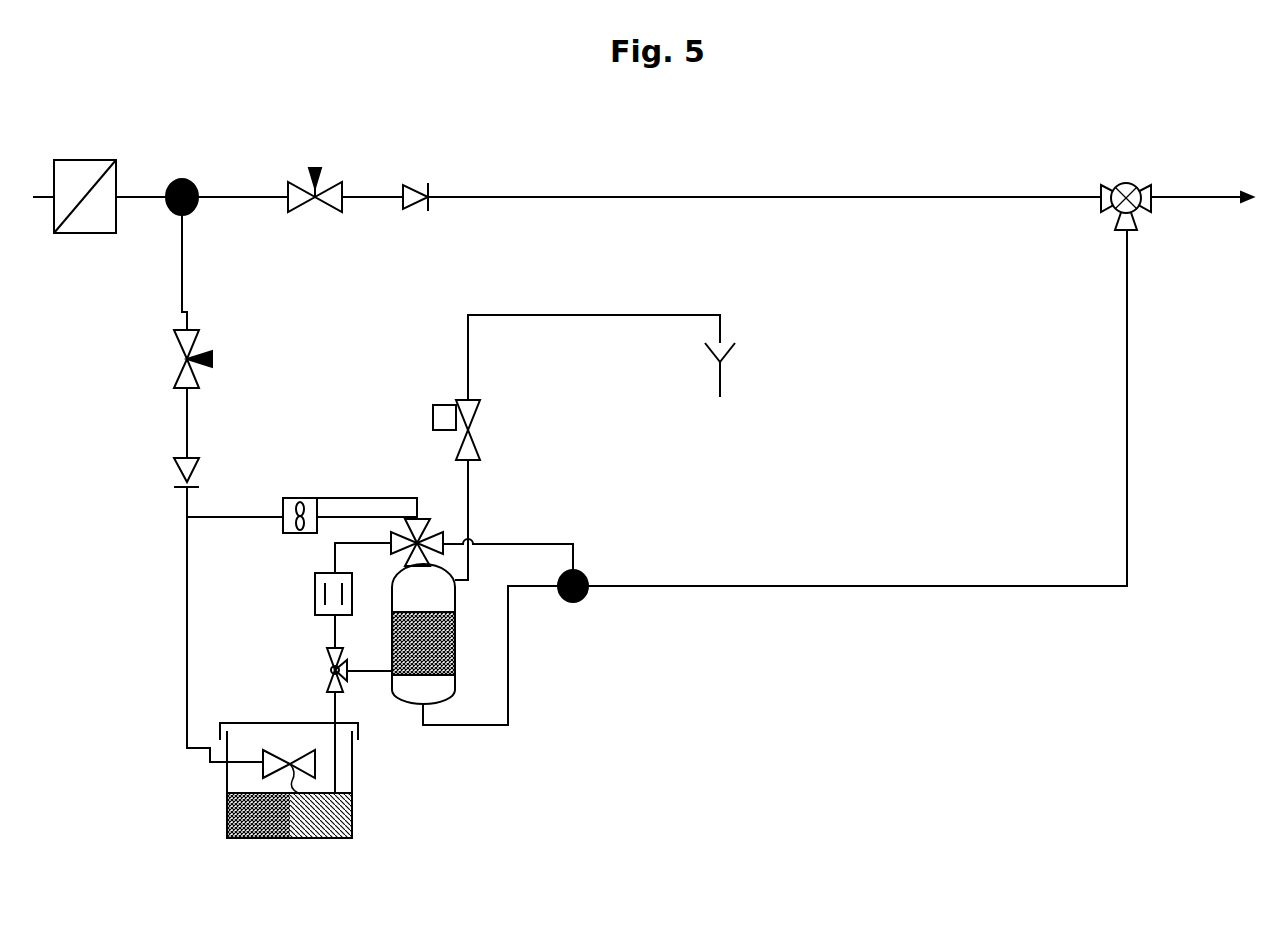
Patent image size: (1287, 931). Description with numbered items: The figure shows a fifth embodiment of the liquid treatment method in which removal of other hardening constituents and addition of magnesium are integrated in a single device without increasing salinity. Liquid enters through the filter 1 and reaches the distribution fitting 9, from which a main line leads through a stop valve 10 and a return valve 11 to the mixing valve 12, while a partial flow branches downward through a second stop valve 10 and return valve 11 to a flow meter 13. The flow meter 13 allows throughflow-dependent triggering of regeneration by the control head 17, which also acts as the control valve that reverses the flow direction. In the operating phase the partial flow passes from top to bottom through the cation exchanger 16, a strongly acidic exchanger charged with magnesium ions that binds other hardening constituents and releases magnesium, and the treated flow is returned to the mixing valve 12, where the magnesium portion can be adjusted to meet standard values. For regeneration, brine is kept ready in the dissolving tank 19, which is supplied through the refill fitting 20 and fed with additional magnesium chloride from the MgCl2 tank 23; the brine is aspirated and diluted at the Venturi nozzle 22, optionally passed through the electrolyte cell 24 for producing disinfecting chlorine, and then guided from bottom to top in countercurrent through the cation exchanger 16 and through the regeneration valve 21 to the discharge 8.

The filter 1 is at (85, 153).
The discharge 8 is at (735, 372).
The distribution fitting 9 is at (185, 168).
The stop valve 10 is at (280, 155).
The return valve 11 is at (405, 155).
The mixing valve 12 is at (1115, 158).
The flow meter 13 is at (300, 493).
The cation exchanger 16 is at (462, 643).
The control head 17 is at (433, 503).
The dissolving tank 19 is at (368, 808).
The refill fitting 20 is at (265, 748).
The regeneration valve 21 is at (493, 430).
The Venturi nozzle 22 is at (317, 660).
The MgCl2 tank 23 is at (213, 807).
The electrolyte cell 24 is at (312, 593).